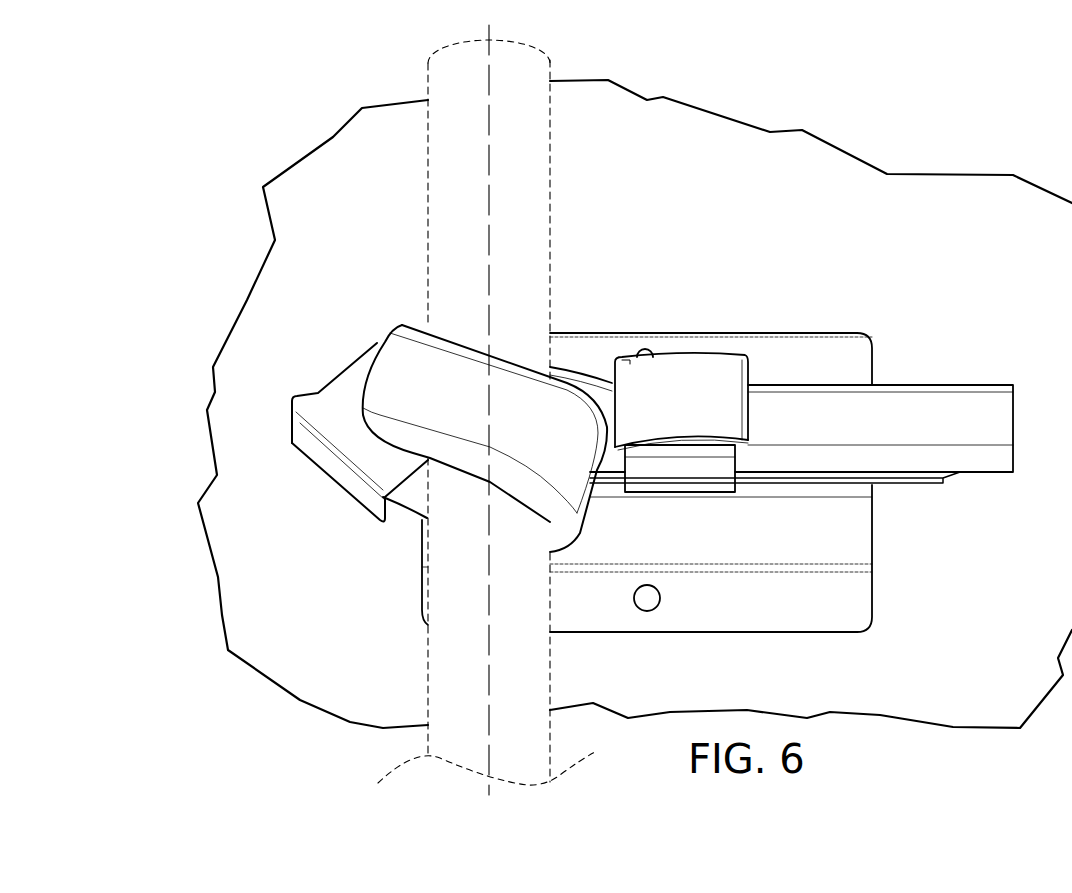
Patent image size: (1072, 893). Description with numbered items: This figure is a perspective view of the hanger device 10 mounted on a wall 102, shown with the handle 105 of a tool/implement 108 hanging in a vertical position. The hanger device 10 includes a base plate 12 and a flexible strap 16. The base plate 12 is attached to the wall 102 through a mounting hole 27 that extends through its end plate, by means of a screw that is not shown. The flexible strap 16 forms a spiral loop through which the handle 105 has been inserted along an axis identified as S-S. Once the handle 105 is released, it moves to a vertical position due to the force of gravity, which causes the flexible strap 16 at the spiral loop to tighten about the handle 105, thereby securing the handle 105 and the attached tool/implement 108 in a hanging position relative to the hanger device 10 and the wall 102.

The hanger device 10 is at (602, 296).
The base plate 12 is at (796, 352).
The flexible strap 16 is at (928, 412).
The mounting hole 27 is at (646, 355).
The wall 102 is at (838, 218).
The handle 105 is at (540, 128).
The tool/implement 108 is at (443, 692).